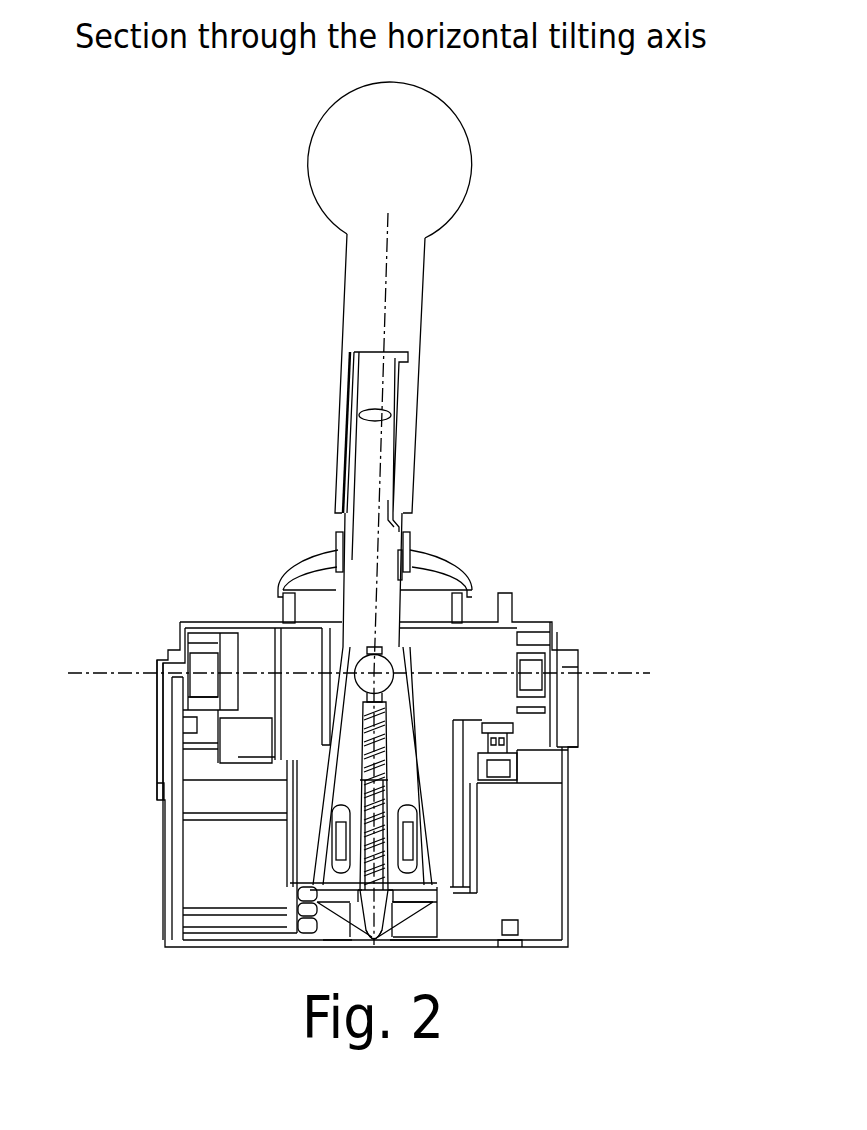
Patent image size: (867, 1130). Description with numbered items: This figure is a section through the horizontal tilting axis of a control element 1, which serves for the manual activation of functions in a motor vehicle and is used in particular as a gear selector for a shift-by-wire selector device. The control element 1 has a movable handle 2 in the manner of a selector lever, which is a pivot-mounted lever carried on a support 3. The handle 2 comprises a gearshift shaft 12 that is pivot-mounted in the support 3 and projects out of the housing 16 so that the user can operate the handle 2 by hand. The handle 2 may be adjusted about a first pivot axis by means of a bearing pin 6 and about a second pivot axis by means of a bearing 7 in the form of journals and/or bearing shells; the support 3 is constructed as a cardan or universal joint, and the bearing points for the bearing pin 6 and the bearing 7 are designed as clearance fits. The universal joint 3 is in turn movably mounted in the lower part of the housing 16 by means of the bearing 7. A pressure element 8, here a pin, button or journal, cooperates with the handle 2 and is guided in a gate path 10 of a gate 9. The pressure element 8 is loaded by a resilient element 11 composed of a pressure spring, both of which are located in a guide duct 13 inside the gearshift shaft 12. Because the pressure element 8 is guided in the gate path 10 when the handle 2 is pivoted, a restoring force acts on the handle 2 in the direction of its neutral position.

The control element 1 is at (559, 134).
The handle 2 is at (403, 272).
The support 3 is at (485, 660).
The bearing pin 6 is at (378, 663).
The bearing 7 is at (189, 715).
The pressure element 8 is at (377, 922).
The gate 9 is at (428, 912).
The gate path 10 is at (338, 920).
The resilient element 11 is at (369, 759).
The gearshift shaft 12 is at (385, 370).
The guide duct 13 is at (383, 765).
The housing 16 is at (155, 774).